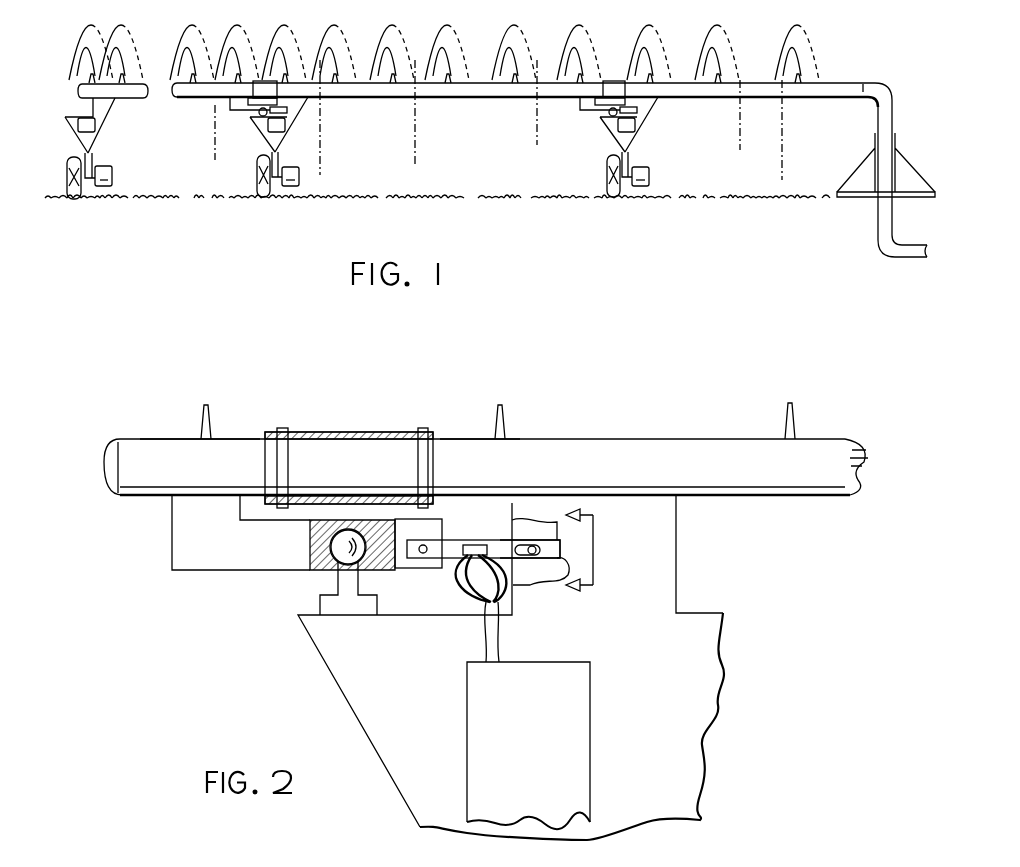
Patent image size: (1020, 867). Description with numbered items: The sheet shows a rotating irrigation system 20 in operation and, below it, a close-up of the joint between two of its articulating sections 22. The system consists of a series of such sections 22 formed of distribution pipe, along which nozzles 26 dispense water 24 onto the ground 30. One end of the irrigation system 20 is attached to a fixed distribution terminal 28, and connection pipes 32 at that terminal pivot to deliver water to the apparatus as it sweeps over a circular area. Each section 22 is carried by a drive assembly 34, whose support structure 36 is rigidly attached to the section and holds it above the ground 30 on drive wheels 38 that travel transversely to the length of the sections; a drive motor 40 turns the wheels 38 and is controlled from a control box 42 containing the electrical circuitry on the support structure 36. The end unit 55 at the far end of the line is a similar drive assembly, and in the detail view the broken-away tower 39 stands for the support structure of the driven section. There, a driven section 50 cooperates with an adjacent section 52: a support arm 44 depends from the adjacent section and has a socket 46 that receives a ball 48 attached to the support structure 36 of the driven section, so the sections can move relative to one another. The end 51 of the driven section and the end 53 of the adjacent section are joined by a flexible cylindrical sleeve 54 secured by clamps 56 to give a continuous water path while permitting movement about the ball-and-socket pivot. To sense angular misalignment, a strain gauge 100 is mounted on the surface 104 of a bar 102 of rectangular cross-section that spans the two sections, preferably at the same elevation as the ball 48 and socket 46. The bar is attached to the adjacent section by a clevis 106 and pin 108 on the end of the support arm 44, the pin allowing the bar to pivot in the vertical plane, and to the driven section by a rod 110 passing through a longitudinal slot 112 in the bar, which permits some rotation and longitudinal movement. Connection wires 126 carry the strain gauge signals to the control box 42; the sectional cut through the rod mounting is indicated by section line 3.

In FIG. 1, the irrigation system 20 is at (515, 134).
In FIG. 1, the articulating sections 22 is at (135, 98).
In FIG. 1, the water 24 is at (793, 30).
In FIG. 1, the nozzles 26 is at (806, 74).
In FIG. 2, the nozzles 26 is at (203, 421).
In FIG. 1, the fixed distribution terminal 28 is at (900, 133).
In FIG. 1, the ground 30 is at (779, 199).
In FIG. 1, the connection pipes 32 is at (895, 97).
In FIG. 1, the drive assembly 34 is at (365, 161).
In FIG. 1, the support structure 36 is at (607, 133).
In FIG. 2, the support structure 36 is at (713, 686).
In FIG. 1, the drive wheels 38 is at (607, 177).
In FIG. 2, the tower 39 is at (730, 622).
In FIG. 1, the drive motor 40 is at (650, 185).
In FIG. 1, the control box 42 is at (632, 131).
In FIG. 2, the control box 42 is at (590, 690).
In FIG. 1, the support arm 44 is at (232, 110).
In FIG. 2, the support arm 44 is at (236, 570).
In FIG. 1, the socket 46 is at (262, 117).
In FIG. 2, the socket 46 is at (330, 563).
In FIG. 2, the ball 48 is at (365, 565).
In FIG. 2, the driven section 50 is at (623, 438).
In FIG. 2, the end of the driven section 51 is at (452, 438).
In FIG. 2, the adjacent section 52 is at (126, 438).
In FIG. 2, the end of the adjacent section 53 is at (248, 438).
In FIG. 1, the flexible cylindrical sleeve 54 is at (266, 81).
In FIG. 2, the flexible cylindrical sleeve 54 is at (351, 431).
In FIG. 1, the end tower 55 is at (64, 124).
In FIG. 2, the clamps 56 is at (283, 427).
In FIG. 2, the strain gauge 100 is at (473, 545).
In FIG. 1, the bar 102 is at (283, 108).
In FIG. 2, the bar 102 is at (452, 540).
In FIG. 2, the deflecting surface 104 is at (495, 540).
In FIG. 2, the clevis 106 is at (478, 582).
In FIG. 2, the pin 108 is at (423, 557).
In FIG. 2, the rod 110 is at (533, 545).
In FIG. 2, the longitudinal slot 112 is at (555, 547).
In FIG. 2, the connection wires 126 is at (485, 604).
In FIG. 2, the section line 3- 3 is at (589, 547).